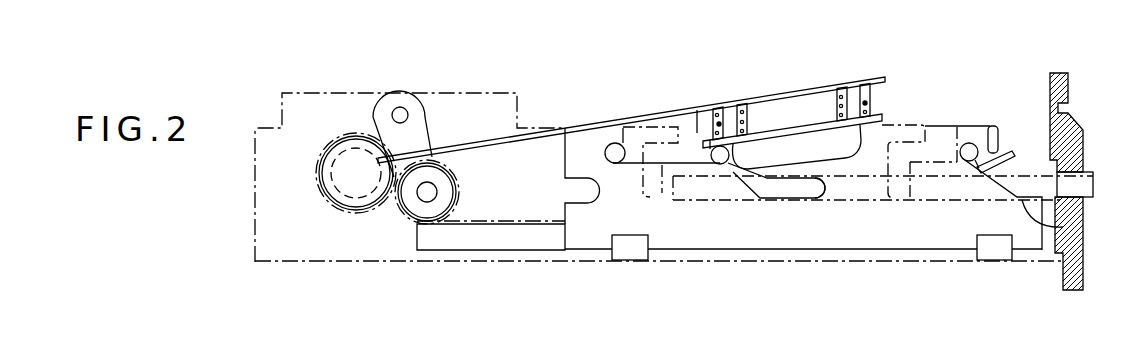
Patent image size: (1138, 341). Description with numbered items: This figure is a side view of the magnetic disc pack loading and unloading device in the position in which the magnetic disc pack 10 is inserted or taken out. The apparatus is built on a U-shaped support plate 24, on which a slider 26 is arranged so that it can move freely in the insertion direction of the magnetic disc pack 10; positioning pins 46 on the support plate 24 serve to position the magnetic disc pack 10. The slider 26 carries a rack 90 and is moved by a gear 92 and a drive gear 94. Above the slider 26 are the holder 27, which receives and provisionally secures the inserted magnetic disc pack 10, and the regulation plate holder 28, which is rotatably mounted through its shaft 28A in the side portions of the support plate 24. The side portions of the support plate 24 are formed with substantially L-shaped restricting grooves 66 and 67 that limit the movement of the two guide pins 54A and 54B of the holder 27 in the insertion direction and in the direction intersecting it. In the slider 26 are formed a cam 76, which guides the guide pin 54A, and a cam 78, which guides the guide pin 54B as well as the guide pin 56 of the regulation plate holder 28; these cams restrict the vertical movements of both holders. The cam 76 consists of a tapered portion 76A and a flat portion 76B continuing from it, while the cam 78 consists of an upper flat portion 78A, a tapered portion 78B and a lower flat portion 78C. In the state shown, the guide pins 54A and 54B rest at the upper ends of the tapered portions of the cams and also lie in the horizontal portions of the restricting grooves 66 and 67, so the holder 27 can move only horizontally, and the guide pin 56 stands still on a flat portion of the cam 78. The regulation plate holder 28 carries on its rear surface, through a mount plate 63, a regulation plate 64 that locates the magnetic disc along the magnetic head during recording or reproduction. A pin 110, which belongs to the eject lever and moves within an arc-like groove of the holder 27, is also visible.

The magnetic disc pack 10 is at (1107, 174).
The support plate 24 is at (501, 93).
The slider 26 is at (892, 243).
The holder 27 is at (1010, 138).
The regulation plate holder 28 is at (648, 113).
The shaft 28A is at (400, 107).
The positioning pins 46 is at (650, 243).
The guide pin 54A is at (960, 160).
The guide pin 54B is at (713, 162).
The guide pins 56 is at (608, 165).
The mount plate 63 is at (767, 135).
The regulation plate 64 is at (800, 143).
The restricting groove 66 is at (943, 119).
The restricting groove 67 is at (697, 132).
The cam 76 is at (988, 160).
The tapered portion 76A is at (985, 174).
The flat portion 76B is at (1083, 222).
The cam 78 is at (771, 189).
The upper flat portion 78A is at (652, 172).
The tapered portion 78B is at (738, 185).
The lower flat portion 78C is at (824, 190).
The rack 90 is at (480, 228).
The gear 92 is at (458, 186).
The drive gear 94 is at (318, 181).
The pin 110 is at (350, 132).